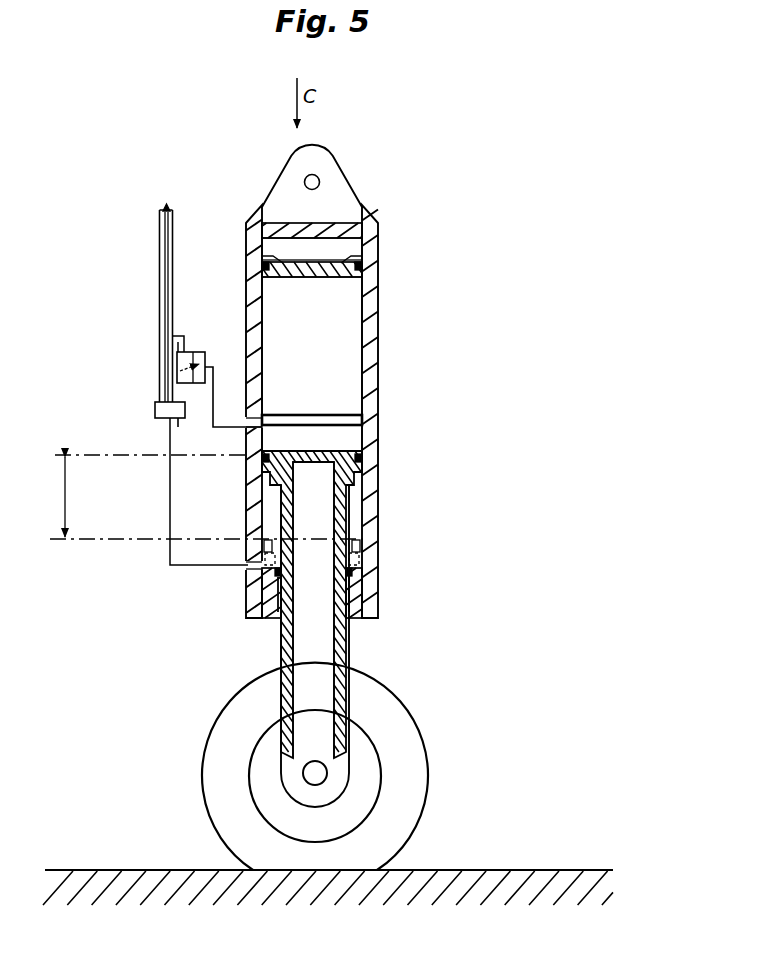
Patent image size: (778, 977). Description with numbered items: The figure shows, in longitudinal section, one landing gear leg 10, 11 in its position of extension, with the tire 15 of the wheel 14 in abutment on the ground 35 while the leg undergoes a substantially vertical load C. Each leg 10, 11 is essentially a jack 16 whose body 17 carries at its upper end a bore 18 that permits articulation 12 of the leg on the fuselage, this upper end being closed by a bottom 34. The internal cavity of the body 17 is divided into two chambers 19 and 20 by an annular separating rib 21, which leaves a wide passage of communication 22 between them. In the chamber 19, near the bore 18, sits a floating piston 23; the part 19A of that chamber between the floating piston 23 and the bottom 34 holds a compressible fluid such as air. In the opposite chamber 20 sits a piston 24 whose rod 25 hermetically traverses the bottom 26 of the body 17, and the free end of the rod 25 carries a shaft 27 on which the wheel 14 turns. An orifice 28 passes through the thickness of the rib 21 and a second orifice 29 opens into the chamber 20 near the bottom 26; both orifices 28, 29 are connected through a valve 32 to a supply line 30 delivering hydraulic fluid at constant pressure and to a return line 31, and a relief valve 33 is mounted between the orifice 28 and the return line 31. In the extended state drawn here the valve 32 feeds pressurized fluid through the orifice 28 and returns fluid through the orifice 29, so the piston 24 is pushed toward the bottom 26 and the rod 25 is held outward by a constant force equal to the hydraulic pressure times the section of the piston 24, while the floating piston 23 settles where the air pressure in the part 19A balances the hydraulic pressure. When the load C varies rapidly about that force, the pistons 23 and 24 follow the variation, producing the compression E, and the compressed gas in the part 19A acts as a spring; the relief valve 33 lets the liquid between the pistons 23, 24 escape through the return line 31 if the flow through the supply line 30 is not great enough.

The leg 10 is at (353, 411).
The leg 11 is at (353, 411).
The articulation 12 is at (315, 180).
The wheel 14 is at (367, 752).
The tire 15 is at (383, 692).
The jack 16 is at (341, 411).
The body 17 is at (372, 294).
The bore 18 is at (333, 164).
The chamber 19 is at (345, 385).
The chamber part 19A is at (338, 245).
The chamber 20 is at (345, 442).
The annular separating rib 21 is at (362, 419).
The passage of communication 22 is at (327, 423).
The floating piston 23 is at (300, 278).
The piston 24 is at (345, 470).
The rod 25 is at (340, 528).
The bottom 26 is at (366, 596).
The shaft 27 is at (313, 774).
The orifice 28 is at (248, 441).
The orifice 29 is at (247, 567).
The supply line 30 is at (159, 272).
The return line 31 is at (174, 281).
The valve 32 is at (164, 419).
The relief valve 33 is at (207, 352).
The bottom 34 is at (338, 223).
The ground 35 is at (488, 870).